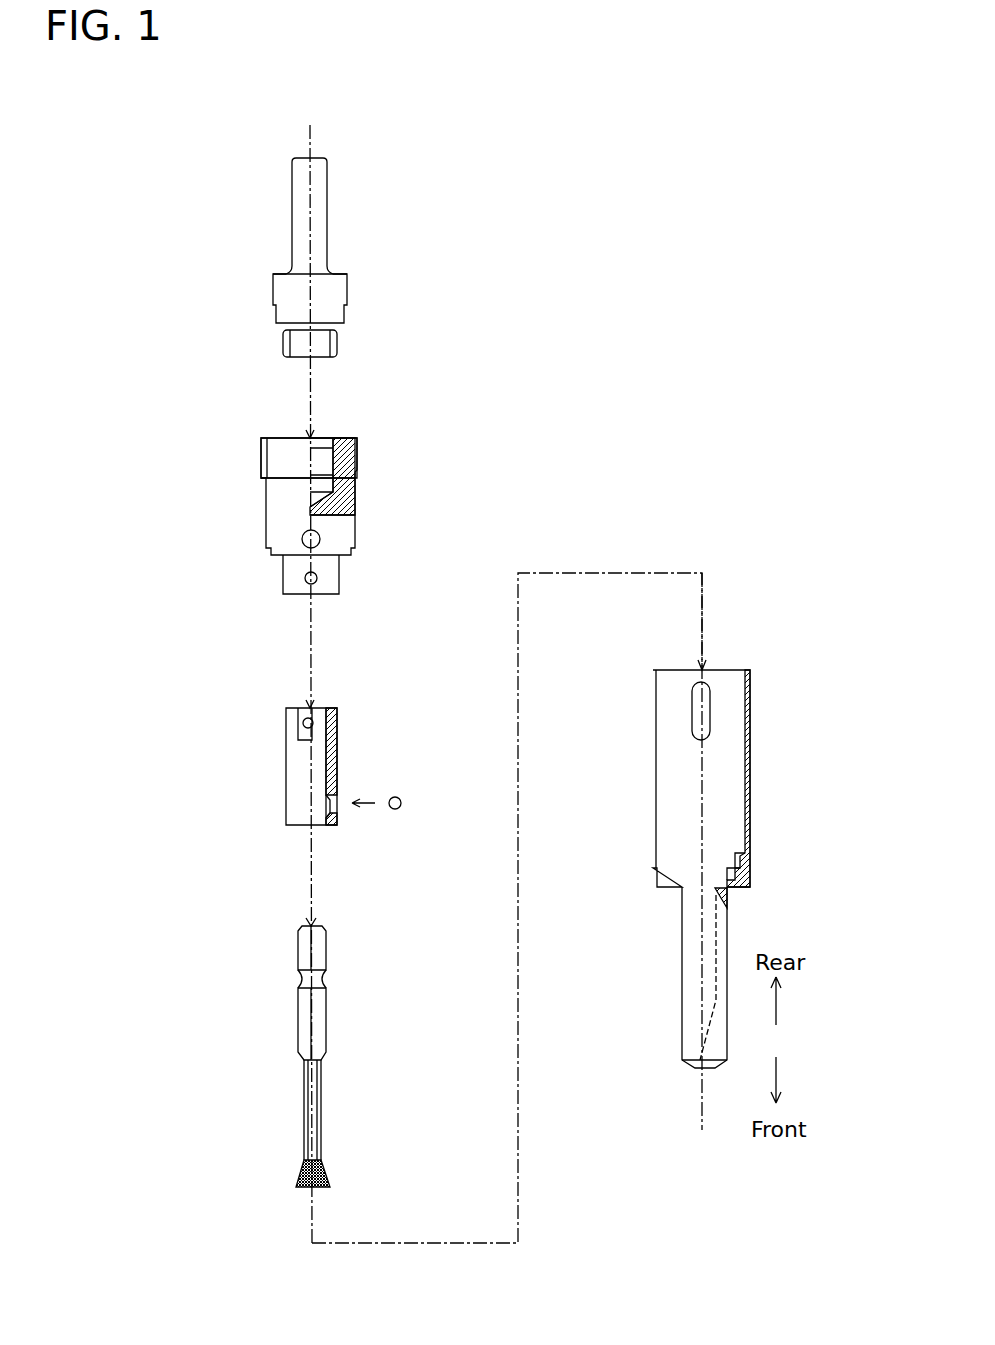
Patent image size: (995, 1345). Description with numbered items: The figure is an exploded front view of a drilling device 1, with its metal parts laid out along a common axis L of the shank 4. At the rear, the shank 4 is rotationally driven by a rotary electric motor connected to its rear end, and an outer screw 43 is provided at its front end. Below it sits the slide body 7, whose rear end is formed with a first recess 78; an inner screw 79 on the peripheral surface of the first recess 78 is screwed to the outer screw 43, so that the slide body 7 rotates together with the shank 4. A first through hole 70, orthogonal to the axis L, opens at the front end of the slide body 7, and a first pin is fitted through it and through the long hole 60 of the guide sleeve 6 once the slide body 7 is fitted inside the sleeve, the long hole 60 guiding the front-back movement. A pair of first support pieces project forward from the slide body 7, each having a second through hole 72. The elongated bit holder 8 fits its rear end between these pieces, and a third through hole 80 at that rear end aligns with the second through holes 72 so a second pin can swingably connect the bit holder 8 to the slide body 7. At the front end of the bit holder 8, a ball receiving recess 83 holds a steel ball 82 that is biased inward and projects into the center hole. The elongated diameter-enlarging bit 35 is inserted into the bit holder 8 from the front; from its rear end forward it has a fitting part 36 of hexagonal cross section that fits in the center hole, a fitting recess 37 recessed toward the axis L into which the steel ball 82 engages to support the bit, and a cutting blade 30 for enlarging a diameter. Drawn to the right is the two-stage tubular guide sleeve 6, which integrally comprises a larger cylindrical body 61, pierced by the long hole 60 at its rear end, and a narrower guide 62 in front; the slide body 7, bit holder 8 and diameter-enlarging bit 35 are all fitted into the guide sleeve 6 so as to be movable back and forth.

The drilling device 1 is at (509, 506).
The axis L is at (311, 200).
The shank 4 is at (318, 243).
The outer screw 43 is at (338, 343).
The first recess 78 is at (326, 438).
The inner screw 79 is at (330, 460).
The slide body 7 is at (356, 493).
The first through hole 70 is at (320, 539).
The second through hole 72 is at (317, 577).
The bit holder 8 is at (337, 717).
The third through hole 80 is at (304, 720).
The ball receiving recess 83 is at (336, 797).
The steel ball 82 is at (402, 803).
The diameter-enlarging bit 35 is at (389, 1052).
The fitting part 36 is at (320, 945).
The fitting recess 37 is at (325, 978).
The cutting blade 30 is at (323, 1175).
The guide sleeve 6 is at (756, 851).
The long hole 60 is at (710, 710).
The cylindrical body 61 is at (750, 790).
The guide 62 is at (728, 948).